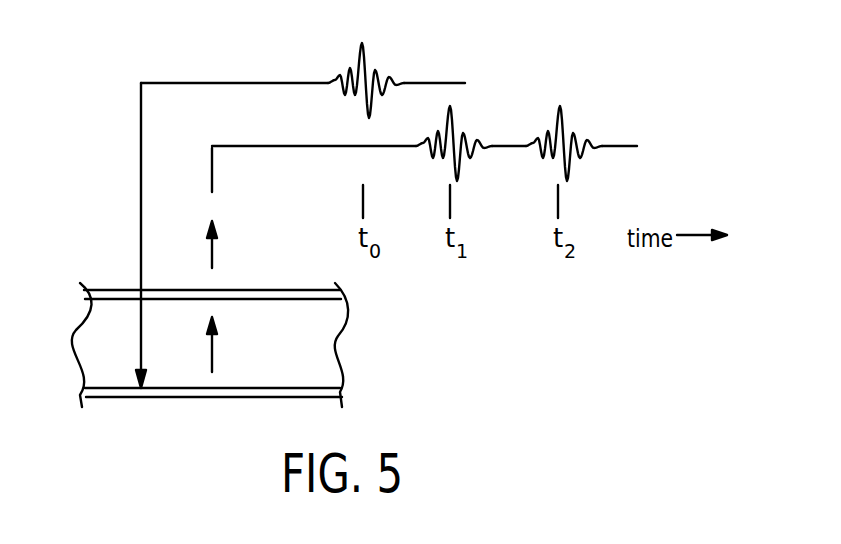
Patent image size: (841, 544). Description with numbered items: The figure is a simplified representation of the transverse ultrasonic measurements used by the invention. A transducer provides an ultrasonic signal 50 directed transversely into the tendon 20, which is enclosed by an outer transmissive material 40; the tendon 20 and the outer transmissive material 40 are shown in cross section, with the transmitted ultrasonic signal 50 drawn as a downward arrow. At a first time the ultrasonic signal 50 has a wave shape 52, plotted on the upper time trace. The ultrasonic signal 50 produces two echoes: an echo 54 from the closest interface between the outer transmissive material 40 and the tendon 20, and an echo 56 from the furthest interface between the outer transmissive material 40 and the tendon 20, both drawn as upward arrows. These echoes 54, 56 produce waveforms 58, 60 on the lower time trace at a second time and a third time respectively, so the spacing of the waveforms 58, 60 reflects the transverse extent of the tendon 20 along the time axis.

The tendon 20 is at (110, 343).
The outer transmissive material 40 is at (107, 288).
The ultrasonic signal 50 is at (139, 212).
The wave shape 52 is at (365, 52).
The echo 54 is at (212, 252).
The echo 56 is at (212, 352).
The waveform 58 is at (453, 118).
The waveform 60 is at (563, 118).